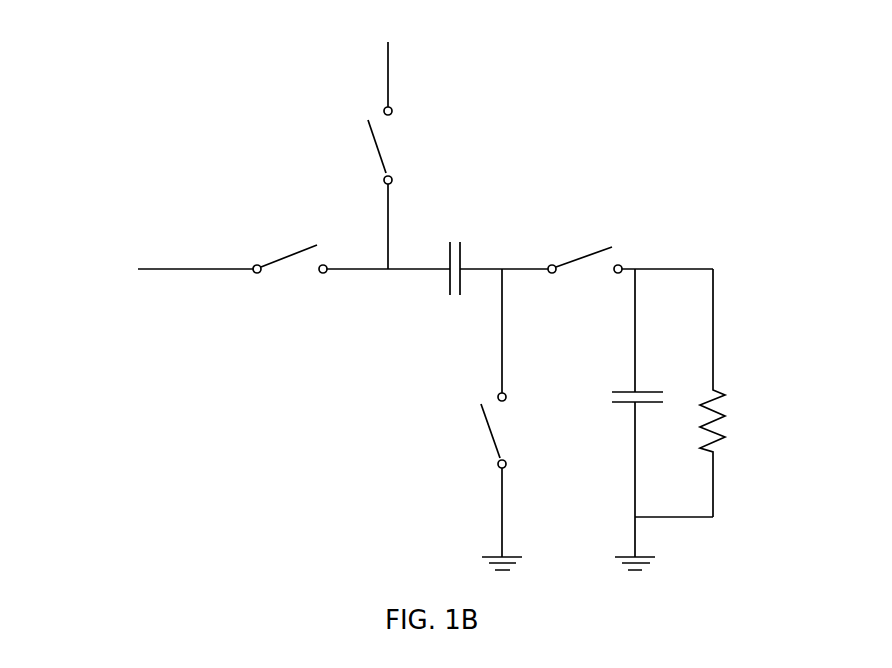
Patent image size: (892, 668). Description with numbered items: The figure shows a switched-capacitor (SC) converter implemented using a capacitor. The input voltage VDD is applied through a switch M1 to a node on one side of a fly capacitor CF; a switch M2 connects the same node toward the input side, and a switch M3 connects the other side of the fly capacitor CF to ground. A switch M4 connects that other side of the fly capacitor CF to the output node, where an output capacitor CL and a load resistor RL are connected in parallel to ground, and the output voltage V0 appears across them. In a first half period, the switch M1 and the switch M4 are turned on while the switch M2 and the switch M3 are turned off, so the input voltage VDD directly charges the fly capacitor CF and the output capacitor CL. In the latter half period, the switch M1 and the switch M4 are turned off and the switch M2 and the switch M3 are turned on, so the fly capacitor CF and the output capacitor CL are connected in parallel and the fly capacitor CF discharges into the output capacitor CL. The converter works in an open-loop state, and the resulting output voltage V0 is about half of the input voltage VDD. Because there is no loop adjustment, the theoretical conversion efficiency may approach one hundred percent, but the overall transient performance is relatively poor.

The input voltage VDD is at (386, 57).
The output voltage V0 is at (408, 262).
The switch M1 is at (397, 188).
The switch M2 is at (351, 277).
The switch M3 is at (511, 419).
The switch M4 is at (585, 250).
The fly capacitor CF is at (496, 253).
The output capacitor CL is at (657, 419).
The load resistor RL is at (730, 393).